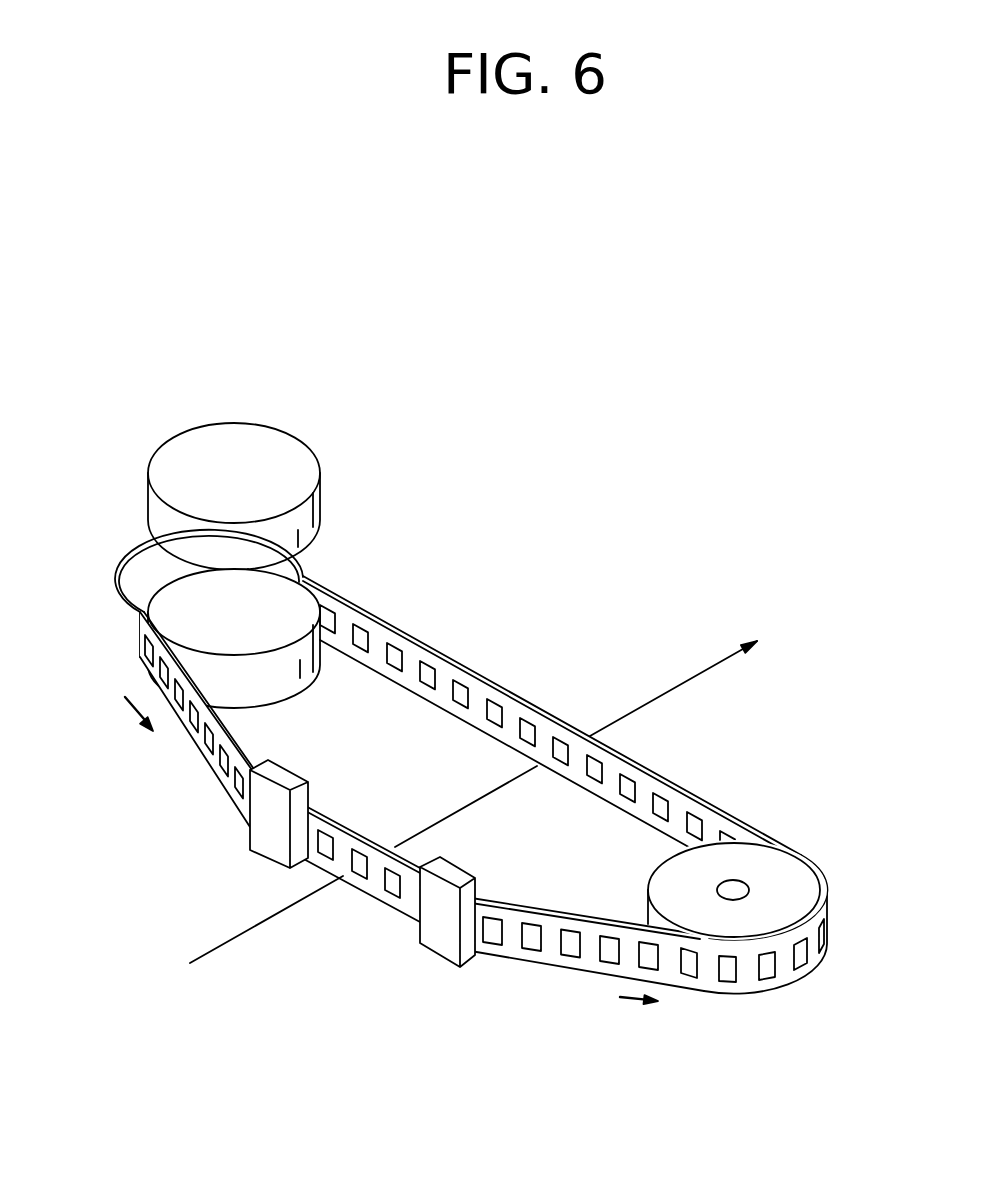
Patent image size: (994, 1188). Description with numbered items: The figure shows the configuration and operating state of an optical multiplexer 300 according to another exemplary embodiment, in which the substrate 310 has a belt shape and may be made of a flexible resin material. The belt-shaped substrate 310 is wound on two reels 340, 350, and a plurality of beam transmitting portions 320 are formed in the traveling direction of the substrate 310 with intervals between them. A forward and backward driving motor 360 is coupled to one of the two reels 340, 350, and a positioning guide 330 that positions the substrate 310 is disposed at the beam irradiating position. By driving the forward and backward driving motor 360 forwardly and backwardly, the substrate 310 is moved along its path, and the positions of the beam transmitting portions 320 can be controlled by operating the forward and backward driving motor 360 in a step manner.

The optical multiplexer 300 is at (504, 692).
The substrate 310 is at (471, 762).
The beam transmitting portions 320 is at (358, 868).
The positioning guide 330 is at (438, 940).
The reel 340 is at (294, 599).
The reel 350 is at (780, 878).
The forward and backward driving motor 360 is at (273, 448).